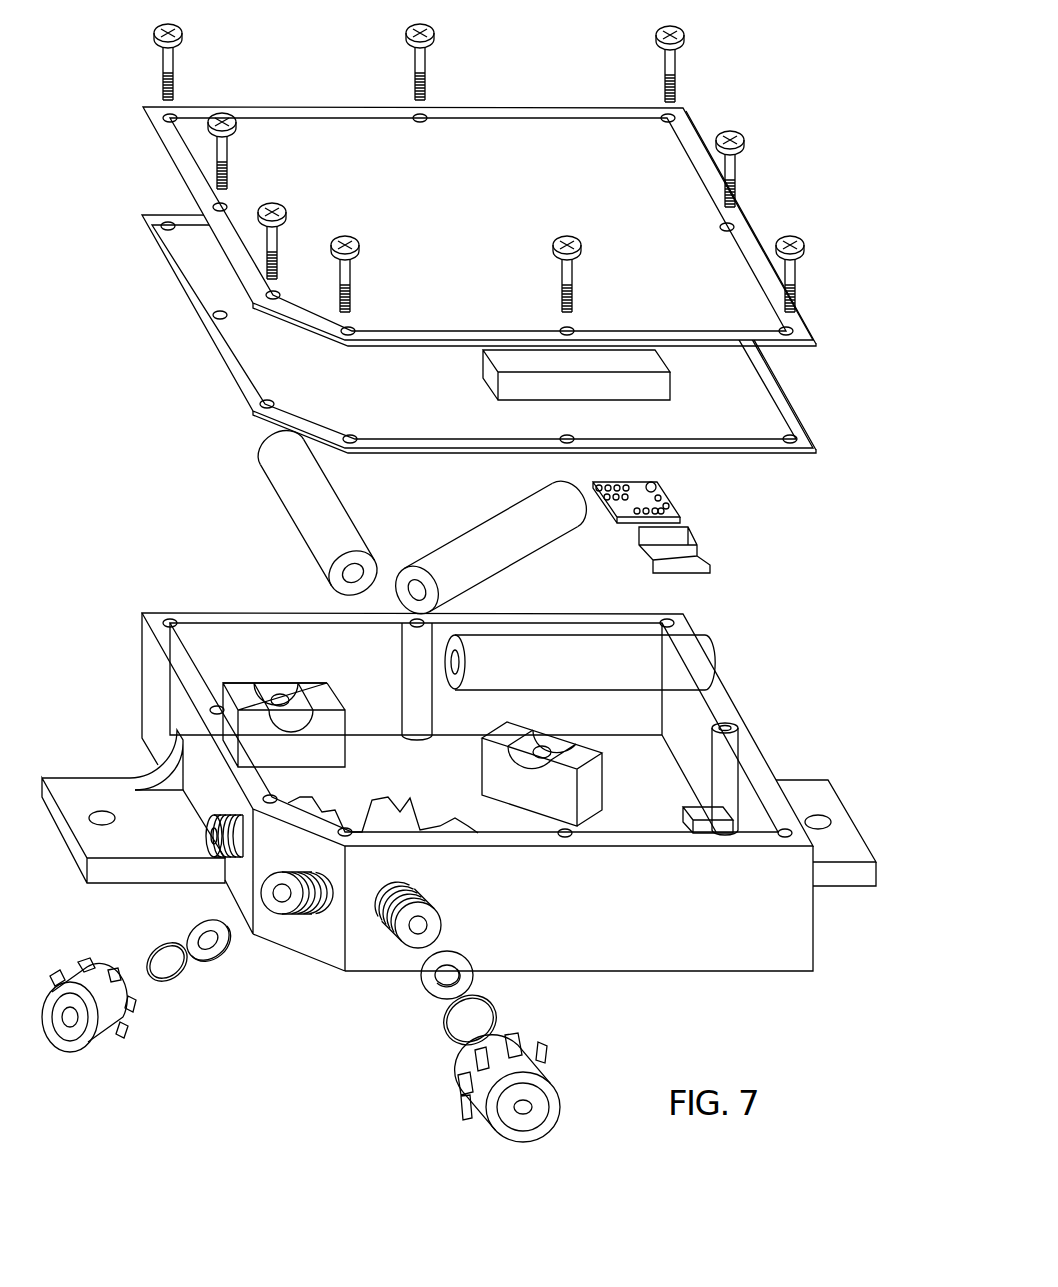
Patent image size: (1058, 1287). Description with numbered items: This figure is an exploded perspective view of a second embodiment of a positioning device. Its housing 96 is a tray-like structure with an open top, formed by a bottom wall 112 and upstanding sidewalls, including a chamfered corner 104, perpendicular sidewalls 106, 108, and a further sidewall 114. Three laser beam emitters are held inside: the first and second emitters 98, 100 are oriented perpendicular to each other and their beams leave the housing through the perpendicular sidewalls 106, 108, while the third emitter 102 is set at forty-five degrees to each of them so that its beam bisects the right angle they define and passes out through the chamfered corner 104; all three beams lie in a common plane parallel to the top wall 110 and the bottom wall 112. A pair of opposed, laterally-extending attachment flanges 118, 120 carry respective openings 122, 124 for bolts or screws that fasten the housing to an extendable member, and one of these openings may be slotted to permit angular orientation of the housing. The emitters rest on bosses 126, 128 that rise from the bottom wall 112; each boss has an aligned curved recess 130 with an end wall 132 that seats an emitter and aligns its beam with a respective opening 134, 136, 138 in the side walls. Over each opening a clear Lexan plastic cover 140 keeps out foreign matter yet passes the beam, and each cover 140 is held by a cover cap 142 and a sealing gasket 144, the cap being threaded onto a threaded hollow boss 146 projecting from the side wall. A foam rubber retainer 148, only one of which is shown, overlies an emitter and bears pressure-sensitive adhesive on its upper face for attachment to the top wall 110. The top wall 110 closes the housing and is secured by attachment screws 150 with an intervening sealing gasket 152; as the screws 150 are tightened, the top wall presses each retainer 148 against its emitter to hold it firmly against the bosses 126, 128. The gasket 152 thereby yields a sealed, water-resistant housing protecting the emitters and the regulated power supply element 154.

The housing 96 is at (720, 700).
The first laser beam emitter 98 is at (706, 652).
The second laser beam emitter 100 is at (284, 508).
The third laser beam emitter 102 is at (470, 530).
The chamfered corner 104 is at (316, 956).
The sidewall 106 is at (698, 971).
The sidewall 108 is at (154, 664).
The top wall 110 is at (550, 126).
The bottom wall 112 is at (657, 763).
The sidewall 114 is at (265, 612).
The attachment flange 118 is at (62, 774).
The attachment flange 120 is at (796, 786).
The opening 122 is at (103, 810).
The opening 124 is at (829, 815).
The boss 126 is at (315, 690).
The boss 128 is at (384, 800).
The curved recess 130 is at (305, 720).
The end wall 132 is at (278, 698).
The opening 134 is at (207, 838).
The opening 136 is at (432, 924).
The opening 138 is at (282, 883).
The cover 140 is at (180, 980).
The cover cap 142 is at (126, 1042).
The sealing gasket 144 is at (219, 958).
The threaded hollow boss 146 is at (216, 815).
The foam rubber retainer 148 is at (630, 358).
The attachment screw 150 is at (678, 58).
The sealing gasket 152 is at (252, 377).
The regulated power supply element 154 is at (690, 535).